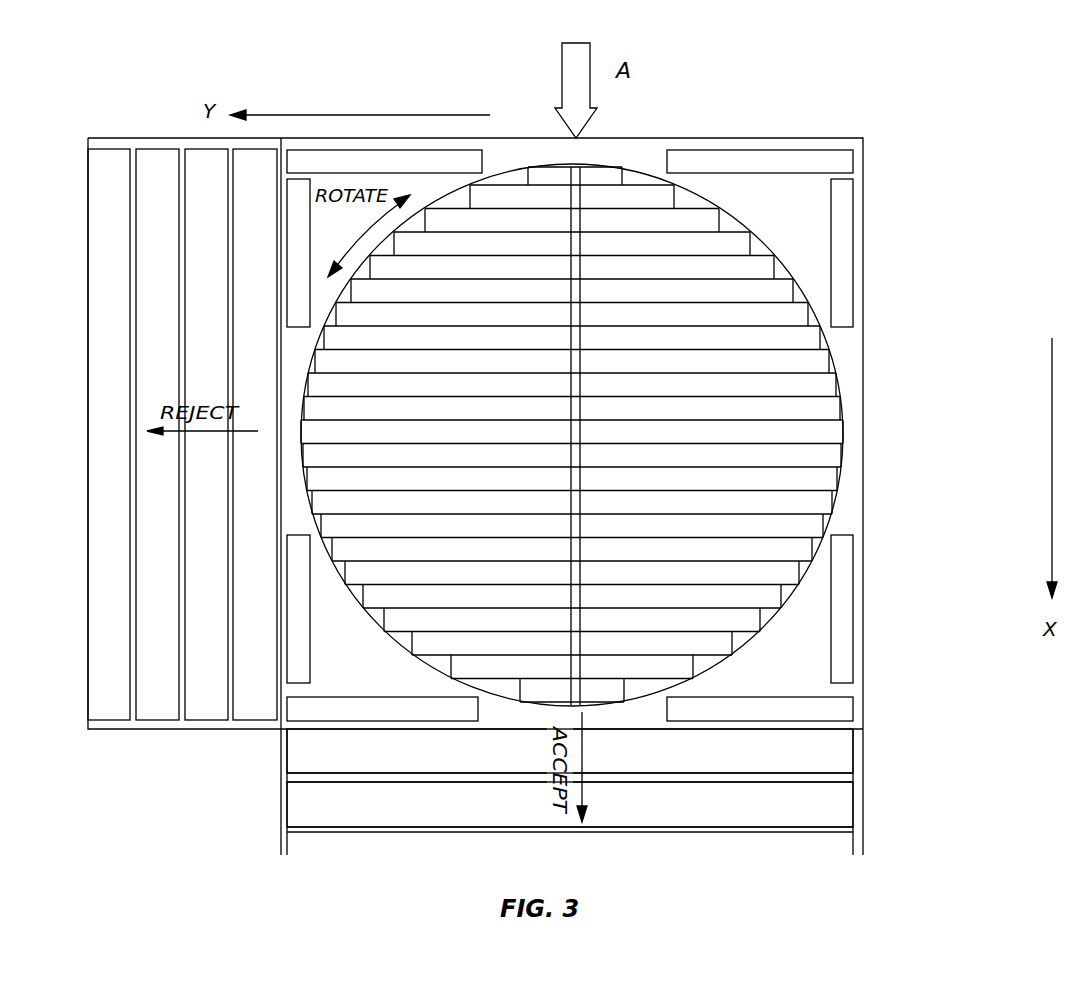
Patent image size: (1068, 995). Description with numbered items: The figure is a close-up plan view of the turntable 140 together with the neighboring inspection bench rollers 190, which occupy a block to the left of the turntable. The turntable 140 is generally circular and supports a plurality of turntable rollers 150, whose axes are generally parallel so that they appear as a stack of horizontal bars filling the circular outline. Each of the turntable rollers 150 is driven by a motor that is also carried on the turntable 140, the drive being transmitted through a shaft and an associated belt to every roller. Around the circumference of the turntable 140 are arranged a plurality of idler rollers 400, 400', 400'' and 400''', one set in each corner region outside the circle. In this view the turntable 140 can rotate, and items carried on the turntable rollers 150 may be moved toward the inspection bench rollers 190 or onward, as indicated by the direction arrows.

The inspection bench rollers 190 is at (118, 162).
The turntable 140 is at (856, 439).
The turntable rollers 150 is at (785, 577).
The idler roller 400 is at (800, 230).
The idler roller 400' is at (810, 628).
The idler roller 400'' is at (317, 651).
The idler roller 400''' is at (384, 204).